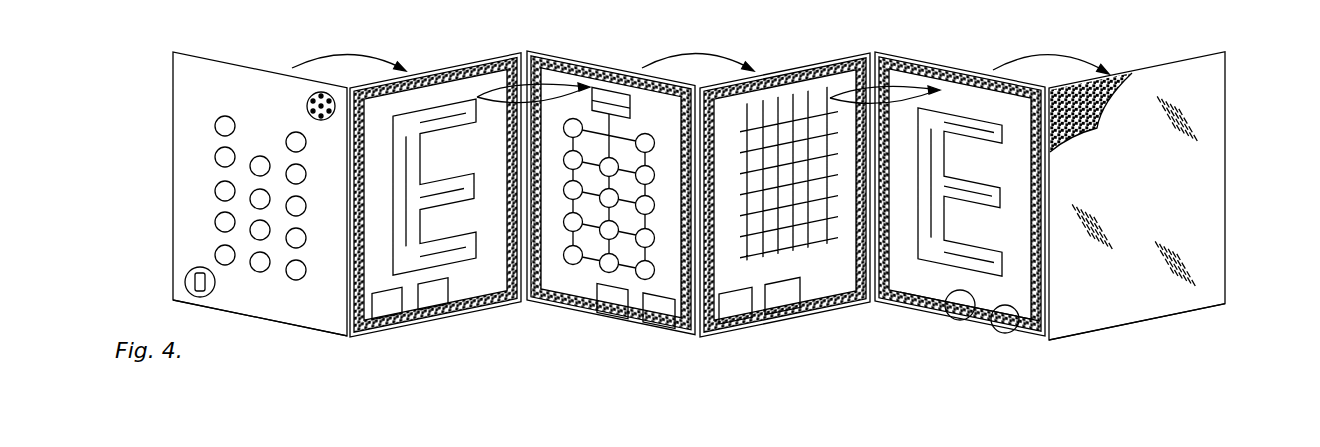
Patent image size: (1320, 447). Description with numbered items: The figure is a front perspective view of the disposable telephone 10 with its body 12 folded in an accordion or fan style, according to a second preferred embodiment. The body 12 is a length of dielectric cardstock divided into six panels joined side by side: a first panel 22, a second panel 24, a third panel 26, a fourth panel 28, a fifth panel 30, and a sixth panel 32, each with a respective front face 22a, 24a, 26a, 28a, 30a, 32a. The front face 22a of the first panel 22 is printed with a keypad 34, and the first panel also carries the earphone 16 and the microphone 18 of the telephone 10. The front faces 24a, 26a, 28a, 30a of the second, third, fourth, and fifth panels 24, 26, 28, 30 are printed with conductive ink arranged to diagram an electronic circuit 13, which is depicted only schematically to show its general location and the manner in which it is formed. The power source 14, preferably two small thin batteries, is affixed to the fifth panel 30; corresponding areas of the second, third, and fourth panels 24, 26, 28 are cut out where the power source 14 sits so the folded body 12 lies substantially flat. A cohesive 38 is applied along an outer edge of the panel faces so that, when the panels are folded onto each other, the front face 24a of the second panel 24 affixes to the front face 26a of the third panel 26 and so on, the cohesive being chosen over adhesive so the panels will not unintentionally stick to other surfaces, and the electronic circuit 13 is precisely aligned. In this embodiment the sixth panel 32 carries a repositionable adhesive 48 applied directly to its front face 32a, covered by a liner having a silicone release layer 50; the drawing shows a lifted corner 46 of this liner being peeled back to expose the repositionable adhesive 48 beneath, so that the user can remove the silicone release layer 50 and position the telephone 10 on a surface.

The disposable telephone 10 is at (163, 62).
The body 12 is at (194, 68).
The electronic circuit 13 is at (572, 258).
The power source 14 is at (963, 320).
The earphone 16 is at (305, 103).
The microphone 18 is at (190, 278).
The first panel 22 is at (188, 142).
The front face of first panel 22a is at (275, 310).
The second panel 24 is at (440, 97).
The front face of second panel 24a is at (468, 288).
The third panel 26 is at (556, 82).
The front face of third panel 26a is at (638, 303).
The fourth panel 28 is at (763, 97).
The front face of fourth panel 28a is at (808, 297).
The fifth panel 30 is at (902, 82).
The front face of fifth panel 30a is at (940, 293).
The sixth panel 32 is at (1207, 72).
The front face of sixth panel 32a is at (1107, 320).
The keypad 34 is at (210, 203).
The cohesive 38 is at (503, 70).
The release liner flap 46 is at (1131, 74).
The repositionable adhesive 48 is at (1099, 95).
The silicone release layer 50 is at (1203, 130).